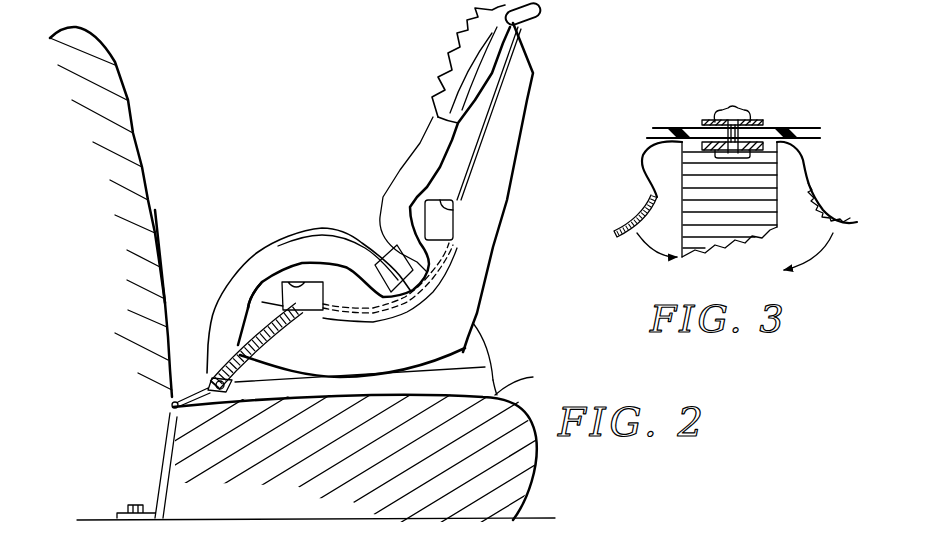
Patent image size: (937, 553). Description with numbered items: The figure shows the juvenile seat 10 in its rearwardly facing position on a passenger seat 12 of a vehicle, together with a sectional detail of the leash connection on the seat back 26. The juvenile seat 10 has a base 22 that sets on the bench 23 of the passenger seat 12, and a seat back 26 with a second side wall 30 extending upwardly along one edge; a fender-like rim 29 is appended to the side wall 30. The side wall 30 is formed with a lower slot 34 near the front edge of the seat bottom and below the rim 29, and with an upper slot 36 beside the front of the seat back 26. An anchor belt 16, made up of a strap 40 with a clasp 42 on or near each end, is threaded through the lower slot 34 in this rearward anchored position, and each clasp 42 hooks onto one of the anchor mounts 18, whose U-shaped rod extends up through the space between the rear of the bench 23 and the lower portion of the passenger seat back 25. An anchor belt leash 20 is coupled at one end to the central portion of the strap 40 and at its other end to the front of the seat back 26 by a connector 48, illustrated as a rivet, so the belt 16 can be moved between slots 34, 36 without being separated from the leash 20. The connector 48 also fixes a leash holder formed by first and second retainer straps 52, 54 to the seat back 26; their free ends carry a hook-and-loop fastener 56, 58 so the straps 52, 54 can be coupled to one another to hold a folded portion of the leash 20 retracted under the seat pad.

In FIG. 2, the juvenile seat 10 is at (548, 49).
In FIG. 3, the juvenile seat 10 is at (792, 119).
In FIG. 2, the passenger seat 12 is at (157, 154).
In FIG. 2, the anchor belt 16 is at (289, 345).
In FIG. 2, the anchor mounts 18 is at (147, 464).
In FIG. 2, the anchor belt leash 20 is at (353, 302).
In FIG. 3, the anchor belt leash 20 is at (711, 255).
In FIG. 2, the base 22 is at (497, 361).
In FIG. 2, the bench 23 is at (520, 372).
In FIG. 2, the passenger seat back 25 is at (157, 227).
In FIG. 2, the seat back 26 is at (527, 136).
In FIG. 2, the fender-like rim 29 is at (295, 240).
In FIG. 2, the second side wall 30 is at (463, 157).
In FIG. 2, the lower slot 34 is at (258, 252).
In FIG. 2, the upper slot 36 is at (441, 207).
In FIG. 2, the strap 40 is at (253, 340).
In FIG. 2, the clasp 42 is at (190, 385).
In FIG. 3, the connector 48 is at (733, 163).
In FIG. 3, the first retainer strap 52 is at (640, 168).
In FIG. 3, the second retainer strap 54 is at (805, 170).
In FIG. 3, the hook-and-loop fastener 56 is at (631, 242).
In FIG. 3, the hook-and-loop fastener 58 is at (828, 215).